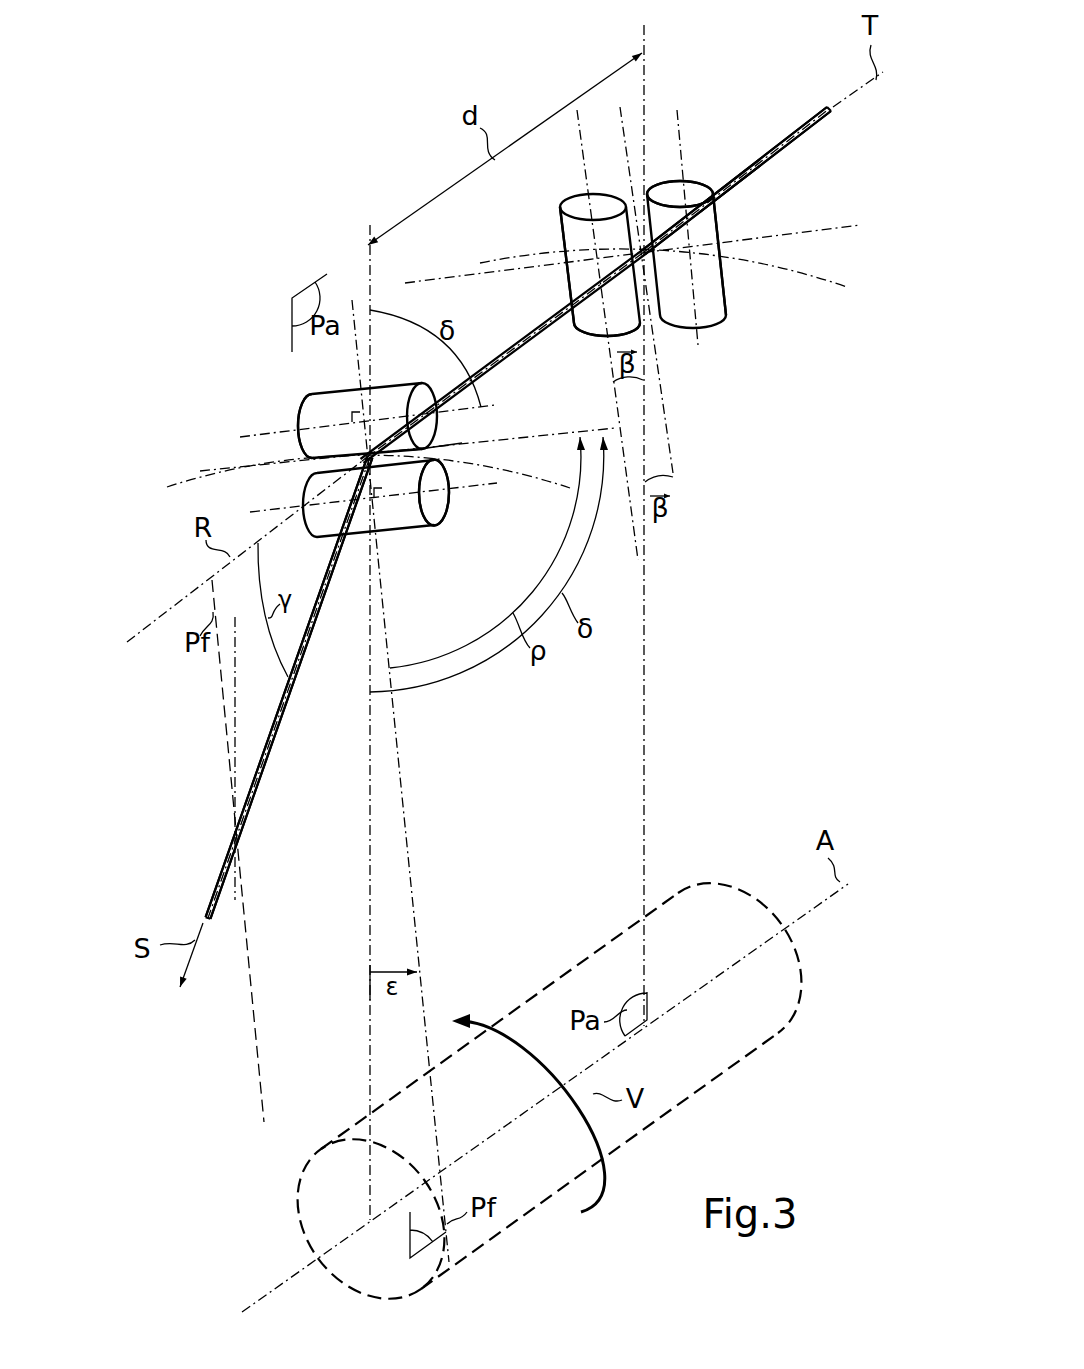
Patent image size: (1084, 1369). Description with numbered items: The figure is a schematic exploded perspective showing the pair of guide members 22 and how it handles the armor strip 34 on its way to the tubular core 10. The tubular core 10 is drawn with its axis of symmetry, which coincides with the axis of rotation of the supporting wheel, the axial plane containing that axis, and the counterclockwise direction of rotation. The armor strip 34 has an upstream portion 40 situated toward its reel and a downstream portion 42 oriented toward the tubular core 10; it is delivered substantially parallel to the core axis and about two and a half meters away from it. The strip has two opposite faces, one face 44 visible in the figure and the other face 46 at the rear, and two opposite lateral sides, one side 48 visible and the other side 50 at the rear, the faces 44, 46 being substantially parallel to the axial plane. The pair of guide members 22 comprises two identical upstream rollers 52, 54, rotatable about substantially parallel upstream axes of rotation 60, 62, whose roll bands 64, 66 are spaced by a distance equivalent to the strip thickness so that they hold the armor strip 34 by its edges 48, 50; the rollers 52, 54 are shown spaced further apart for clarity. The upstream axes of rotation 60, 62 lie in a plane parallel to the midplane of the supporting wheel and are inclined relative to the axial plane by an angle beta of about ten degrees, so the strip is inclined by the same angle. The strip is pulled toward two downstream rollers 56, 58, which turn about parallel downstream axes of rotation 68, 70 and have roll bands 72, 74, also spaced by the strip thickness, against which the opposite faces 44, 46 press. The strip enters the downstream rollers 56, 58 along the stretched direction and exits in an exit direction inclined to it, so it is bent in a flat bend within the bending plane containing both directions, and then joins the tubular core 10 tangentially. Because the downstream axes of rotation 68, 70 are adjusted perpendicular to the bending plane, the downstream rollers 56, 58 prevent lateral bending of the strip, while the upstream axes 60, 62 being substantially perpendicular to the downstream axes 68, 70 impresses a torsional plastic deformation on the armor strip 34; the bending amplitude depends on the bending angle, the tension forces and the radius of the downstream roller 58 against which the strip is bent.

The tubular core 10 is at (510, 1220).
The pair of guide members 22 is at (358, 95).
The armor strip 34 is at (820, 122).
The upstream portion 40 is at (822, 128).
The downstream portion 42 is at (220, 866).
The face 44 is at (795, 150).
The face 46 is at (760, 165).
The lateral side 48 is at (785, 140).
The lateral side 50 is at (755, 178).
The upstream roller 52 is at (672, 315).
The upstream roller 54 is at (570, 238).
The downstream roller 56 is at (305, 420).
The downstream roller 58 is at (420, 522).
The upstream axis of rotation 60 is at (678, 170).
The upstream axis of rotation 62 is at (587, 185).
The roll band 64 is at (725, 290).
The roll band 66 is at (585, 330).
The downstream axis of rotation 68 is at (247, 437).
The downstream axis of rotation 70 is at (497, 485).
The roll band 72 is at (335, 393).
The roll band 74 is at (385, 520).